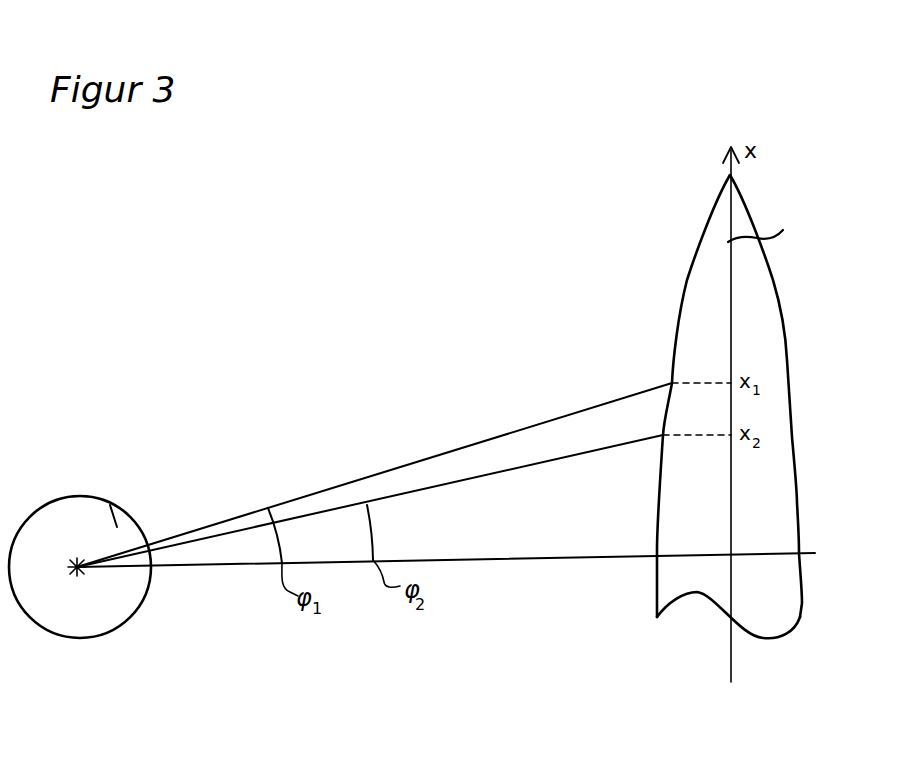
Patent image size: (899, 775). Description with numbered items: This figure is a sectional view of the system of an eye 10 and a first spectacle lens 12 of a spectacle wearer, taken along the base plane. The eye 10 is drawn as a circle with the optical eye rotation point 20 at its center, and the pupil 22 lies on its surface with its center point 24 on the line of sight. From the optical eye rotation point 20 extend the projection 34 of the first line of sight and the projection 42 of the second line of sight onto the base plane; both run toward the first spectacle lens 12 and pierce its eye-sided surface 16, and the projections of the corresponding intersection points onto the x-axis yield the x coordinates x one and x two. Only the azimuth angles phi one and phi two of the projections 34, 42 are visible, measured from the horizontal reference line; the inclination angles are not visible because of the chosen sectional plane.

The eye 10 is at (64, 512).
The first spectacle lens 12 is at (775, 501).
The eye-sided surface 16 is at (657, 604).
The optical eye rotation point 20 is at (67, 585).
The pupil 22 is at (133, 573).
The center point 24 is at (130, 549).
The projection of the first line of sight 34 is at (453, 448).
The projection of the second line of sight 42 is at (470, 480).